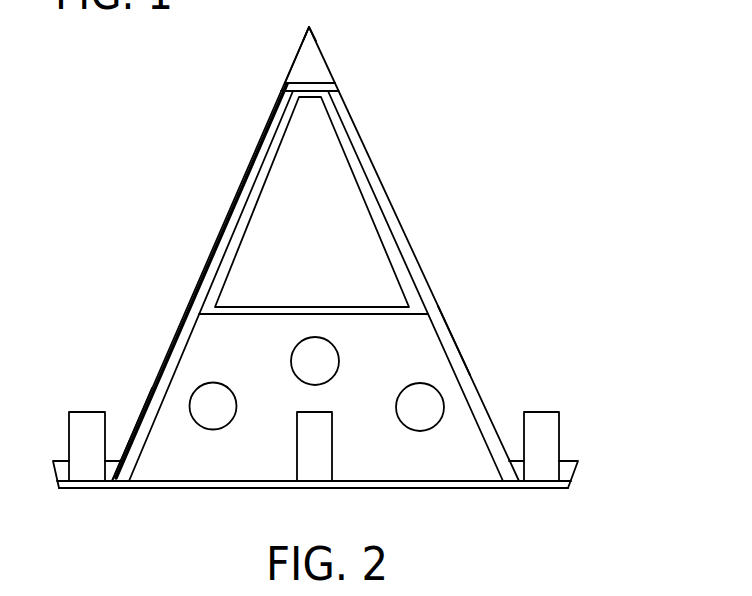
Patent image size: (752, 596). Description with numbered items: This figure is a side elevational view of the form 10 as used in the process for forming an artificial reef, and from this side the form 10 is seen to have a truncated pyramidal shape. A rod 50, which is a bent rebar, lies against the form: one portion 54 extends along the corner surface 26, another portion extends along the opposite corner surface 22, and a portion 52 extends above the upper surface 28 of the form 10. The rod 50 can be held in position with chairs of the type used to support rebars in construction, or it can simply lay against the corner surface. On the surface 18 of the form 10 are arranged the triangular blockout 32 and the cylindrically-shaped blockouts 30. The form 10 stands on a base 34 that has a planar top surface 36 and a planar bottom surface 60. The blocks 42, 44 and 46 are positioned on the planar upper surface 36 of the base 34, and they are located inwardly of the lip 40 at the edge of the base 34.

The form 10 is at (398, 228).
The surface 18 is at (428, 355).
The corner surface 22 is at (448, 312).
The corner surface 26 is at (150, 388).
The upper surface 28 is at (313, 82).
The cylindrically-shaped blockouts 30 is at (220, 381).
The triangular blockout 32 is at (347, 182).
The base 34 is at (557, 488).
The planar top surface 36 is at (392, 480).
The lip 40 is at (577, 459).
The block 42 is at (82, 412).
The block 44 is at (331, 440).
The block 46 is at (548, 428).
The rod 50 is at (292, 63).
The portion 52 is at (313, 31).
The portion 54 is at (217, 240).
The planar bottom surface 60 is at (160, 488).